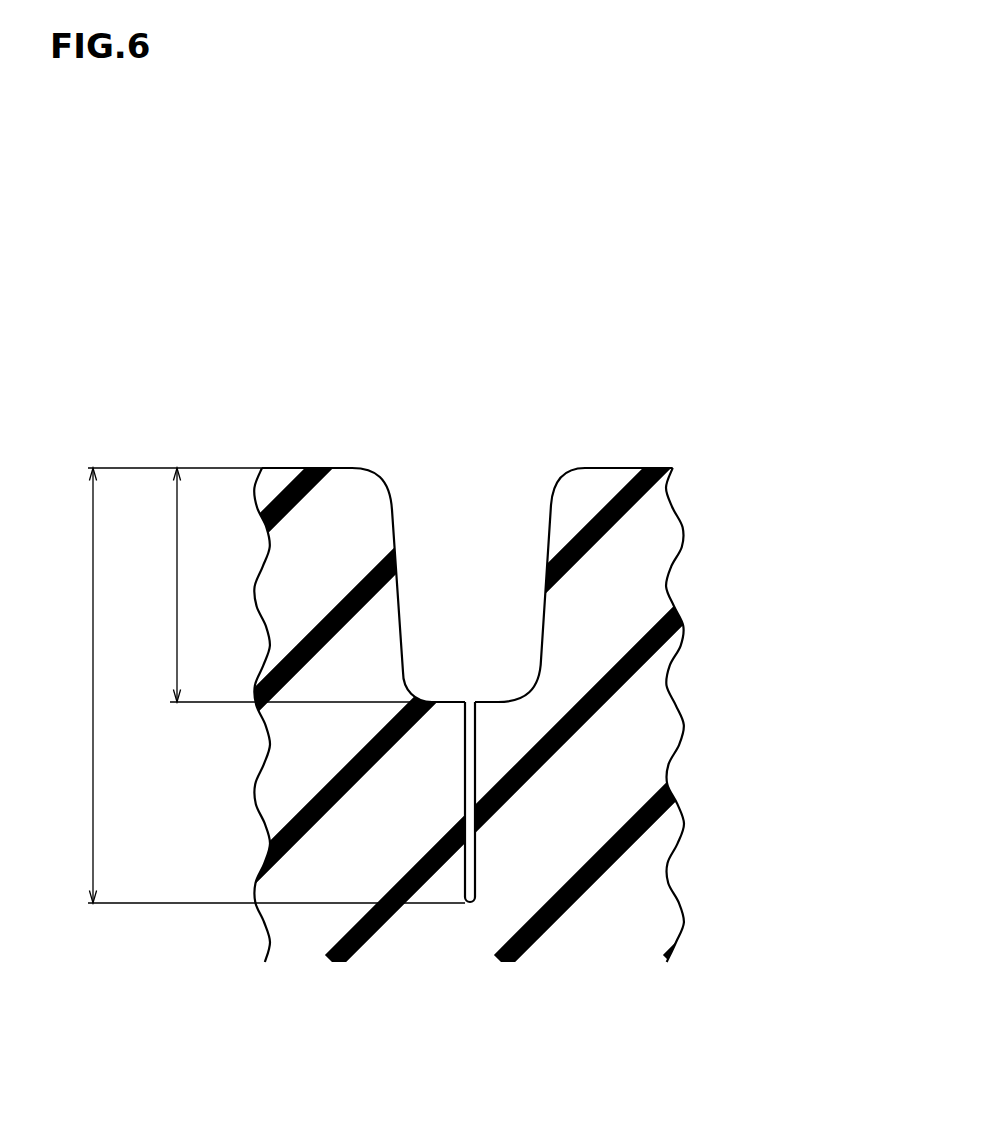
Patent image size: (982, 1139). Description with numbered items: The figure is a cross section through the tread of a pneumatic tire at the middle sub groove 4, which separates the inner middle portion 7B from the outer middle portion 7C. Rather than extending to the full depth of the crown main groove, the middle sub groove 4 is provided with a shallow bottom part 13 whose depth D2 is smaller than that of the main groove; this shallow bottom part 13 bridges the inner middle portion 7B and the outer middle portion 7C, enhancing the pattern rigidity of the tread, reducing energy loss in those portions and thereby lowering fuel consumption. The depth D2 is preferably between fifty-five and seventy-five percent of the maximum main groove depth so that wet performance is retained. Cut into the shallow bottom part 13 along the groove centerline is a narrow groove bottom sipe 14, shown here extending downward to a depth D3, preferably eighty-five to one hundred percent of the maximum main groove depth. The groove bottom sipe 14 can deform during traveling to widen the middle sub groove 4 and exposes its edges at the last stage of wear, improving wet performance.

The middle sub groove 4 is at (463, 475).
The inner middle portion 7B is at (320, 466).
The outer middle portion 7C is at (614, 465).
The shallow bottom part 13 is at (499, 702).
The groove bottom sipe 14 is at (478, 866).
The depth of the shallow part D2 is at (276, 585).
The depth of the groove bottom sipe D3 is at (255, 685).